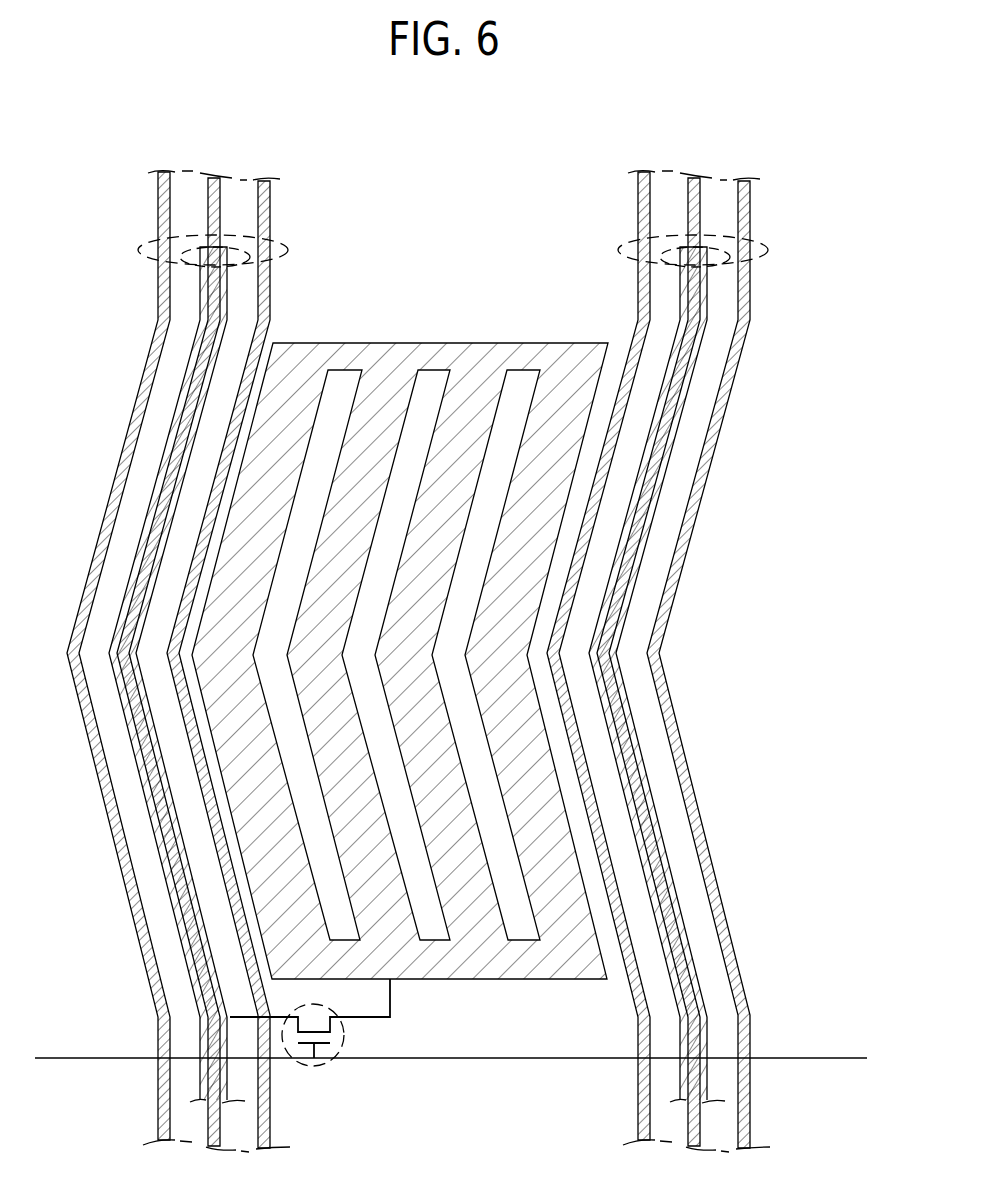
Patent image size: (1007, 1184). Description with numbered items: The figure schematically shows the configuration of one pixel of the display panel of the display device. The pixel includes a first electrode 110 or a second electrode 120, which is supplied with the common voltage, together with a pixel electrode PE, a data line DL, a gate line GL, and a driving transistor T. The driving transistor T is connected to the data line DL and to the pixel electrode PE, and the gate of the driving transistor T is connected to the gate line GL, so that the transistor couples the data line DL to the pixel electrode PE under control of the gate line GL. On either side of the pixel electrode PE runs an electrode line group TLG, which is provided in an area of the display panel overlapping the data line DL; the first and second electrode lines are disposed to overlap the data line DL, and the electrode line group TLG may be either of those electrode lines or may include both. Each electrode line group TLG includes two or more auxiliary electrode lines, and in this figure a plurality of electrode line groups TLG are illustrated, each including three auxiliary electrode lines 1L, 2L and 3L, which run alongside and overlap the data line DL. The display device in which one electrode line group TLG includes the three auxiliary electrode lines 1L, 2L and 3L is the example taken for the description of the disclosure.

The auxiliary electrode line 1L is at (170, 197).
The auxiliary electrode line 2L is at (220, 197).
The auxiliary electrode line 3L is at (270, 197).
The electrode line group TLG is at (138, 250).
The data line DL is at (195, 978).
The gate line GL is at (788, 1055).
The pixel electrode PE is at (470, 356).
The driving transistor T is at (345, 1030).
The first electrode 110 is at (396, 609).
The second electrode 120 is at (338, 392).